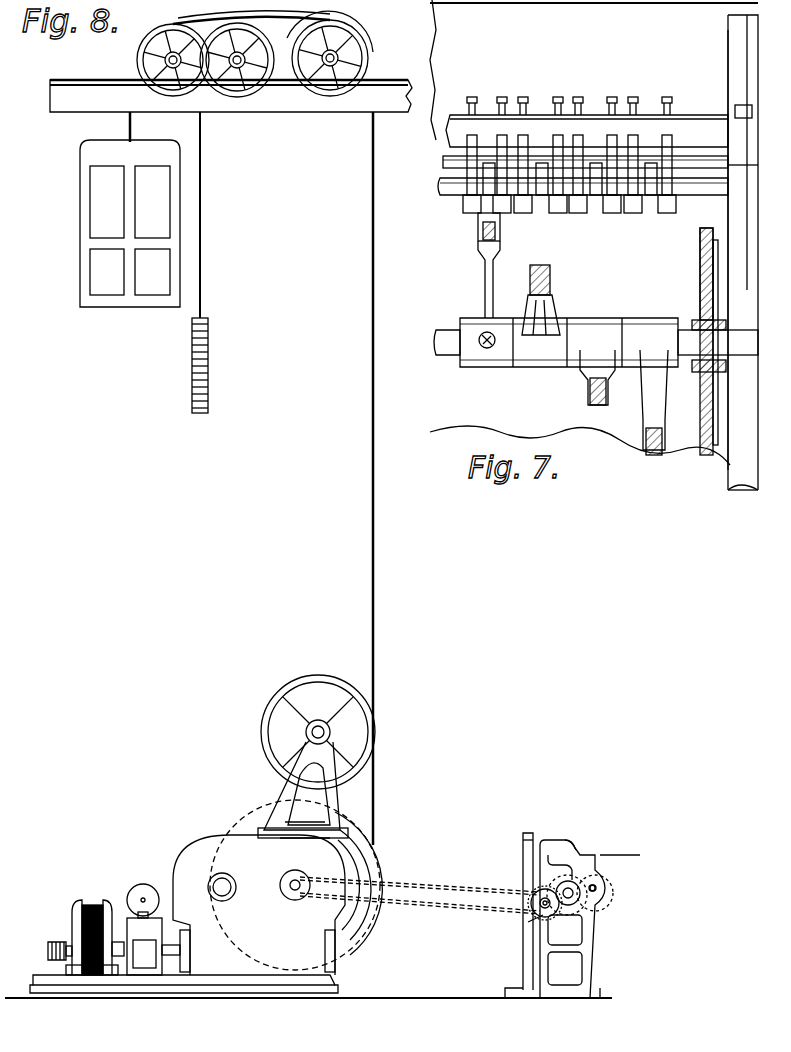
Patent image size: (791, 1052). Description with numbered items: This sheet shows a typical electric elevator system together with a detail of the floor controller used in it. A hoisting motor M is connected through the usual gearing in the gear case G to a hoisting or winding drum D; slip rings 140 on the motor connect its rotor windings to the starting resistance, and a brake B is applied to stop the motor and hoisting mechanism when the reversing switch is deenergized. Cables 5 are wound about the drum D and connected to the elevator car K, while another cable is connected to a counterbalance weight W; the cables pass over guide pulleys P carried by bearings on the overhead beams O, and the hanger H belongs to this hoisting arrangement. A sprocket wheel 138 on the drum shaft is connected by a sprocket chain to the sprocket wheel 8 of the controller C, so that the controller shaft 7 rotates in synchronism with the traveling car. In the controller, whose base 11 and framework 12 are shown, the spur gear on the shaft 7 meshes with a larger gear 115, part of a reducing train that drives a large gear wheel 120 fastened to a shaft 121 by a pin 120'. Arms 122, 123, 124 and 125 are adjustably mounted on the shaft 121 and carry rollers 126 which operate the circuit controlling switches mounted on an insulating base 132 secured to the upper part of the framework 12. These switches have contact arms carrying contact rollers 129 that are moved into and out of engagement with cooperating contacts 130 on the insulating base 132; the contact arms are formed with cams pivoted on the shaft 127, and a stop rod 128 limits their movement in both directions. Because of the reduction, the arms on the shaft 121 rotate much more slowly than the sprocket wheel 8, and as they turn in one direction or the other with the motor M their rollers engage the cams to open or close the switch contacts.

In FIG. 8, the overhead beams O is at (297, 100).
In FIG. 8, the guide pulleys P is at (137, 57).
In FIG. 8, the cables 5 is at (125, 126).
In FIG. 8, the counterweight rope H is at (202, 163).
In FIG. 8, the elevator car K is at (155, 219).
In FIG. 8, the counterbalance weight W is at (209, 377).
In FIG. 8, the hoisting motor M is at (90, 910).
In FIG. 8, the slip rings 140 is at (50, 945).
In FIG. 8, the brake B is at (143, 884).
In FIG. 8, the gear case G is at (230, 855).
In FIG. 8, the hoisting or winding drum D is at (360, 865).
In FIG. 8, the sprocket wheel 138 is at (292, 888).
In FIG. 8, the shaft 7 is at (530, 903).
In FIG. 8, the sprocket wheel 8 is at (528, 922).
In FIG. 8, the circuit controlling apparatus C is at (555, 905).
In FIG. 7, the circuit controlling apparatus C is at (670, 250).
In FIG. 8, the base 11 is at (523, 836).
In FIG. 8, the framework 12 is at (570, 845).
In FIG. 8, the gear 115 is at (578, 908).
In FIG. 8, the rollers 126 is at (596, 888).
In FIG. 7, the rollers 126 is at (497, 232).
In FIG. 8, the insulating base 132 is at (605, 858).
In FIG. 7, the insulating base 132 is at (594, 125).
In FIG. 7, the stop rod 128 is at (687, 160).
In FIG. 7, the shaft 127 is at (703, 188).
In FIG. 7, the contacts 130 is at (500, 143).
In FIG. 7, the contact rollers 129 is at (468, 215).
In FIG. 7, the arm 122 is at (481, 293).
In FIG. 7, the arm 123 is at (555, 308).
In FIG. 7, the shaft 121 is at (690, 350).
In FIG. 7, the arm 124 is at (595, 345).
In FIG. 7, the arm 125 is at (644, 370).
In FIG. 7, the gear wheel 120 is at (702, 364).
In FIG. 7, the pin 120' is at (684, 274).